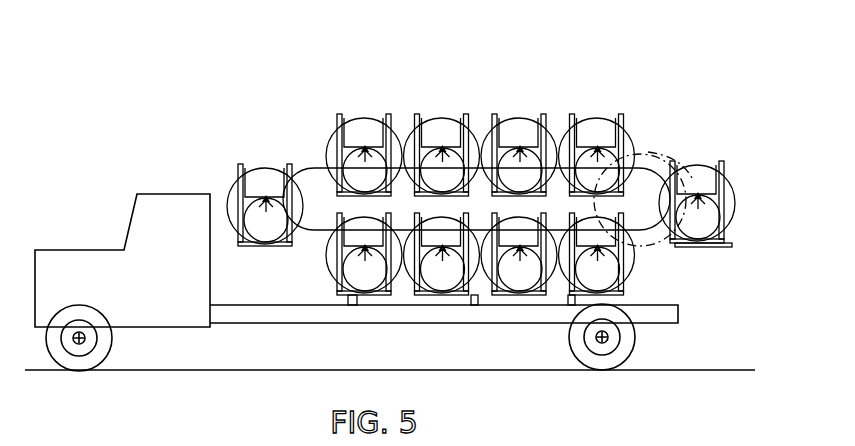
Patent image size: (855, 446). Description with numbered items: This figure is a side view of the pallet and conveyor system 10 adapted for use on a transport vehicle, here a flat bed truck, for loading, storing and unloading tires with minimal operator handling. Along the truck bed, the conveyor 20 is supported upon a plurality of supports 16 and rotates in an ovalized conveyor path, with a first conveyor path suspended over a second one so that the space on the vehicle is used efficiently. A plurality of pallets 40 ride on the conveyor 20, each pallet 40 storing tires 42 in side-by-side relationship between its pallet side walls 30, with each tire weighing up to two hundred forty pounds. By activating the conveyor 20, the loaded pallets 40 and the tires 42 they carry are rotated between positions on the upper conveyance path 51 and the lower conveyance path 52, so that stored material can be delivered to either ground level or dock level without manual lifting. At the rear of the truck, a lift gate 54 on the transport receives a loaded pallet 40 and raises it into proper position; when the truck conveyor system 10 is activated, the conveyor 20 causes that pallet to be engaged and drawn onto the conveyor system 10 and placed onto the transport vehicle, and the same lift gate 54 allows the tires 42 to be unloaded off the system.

The pallet and conveyor system 10 is at (700, 108).
The supports 16 is at (350, 306).
The conveyor 20 is at (315, 150).
The pallet side walls 30 is at (575, 114).
The pallet 40 is at (421, 98).
The tires 42 is at (447, 117).
The upper conveyance path 51 is at (266, 152).
The lower conveyance path 52 is at (302, 243).
The lift gate 54 is at (722, 248).